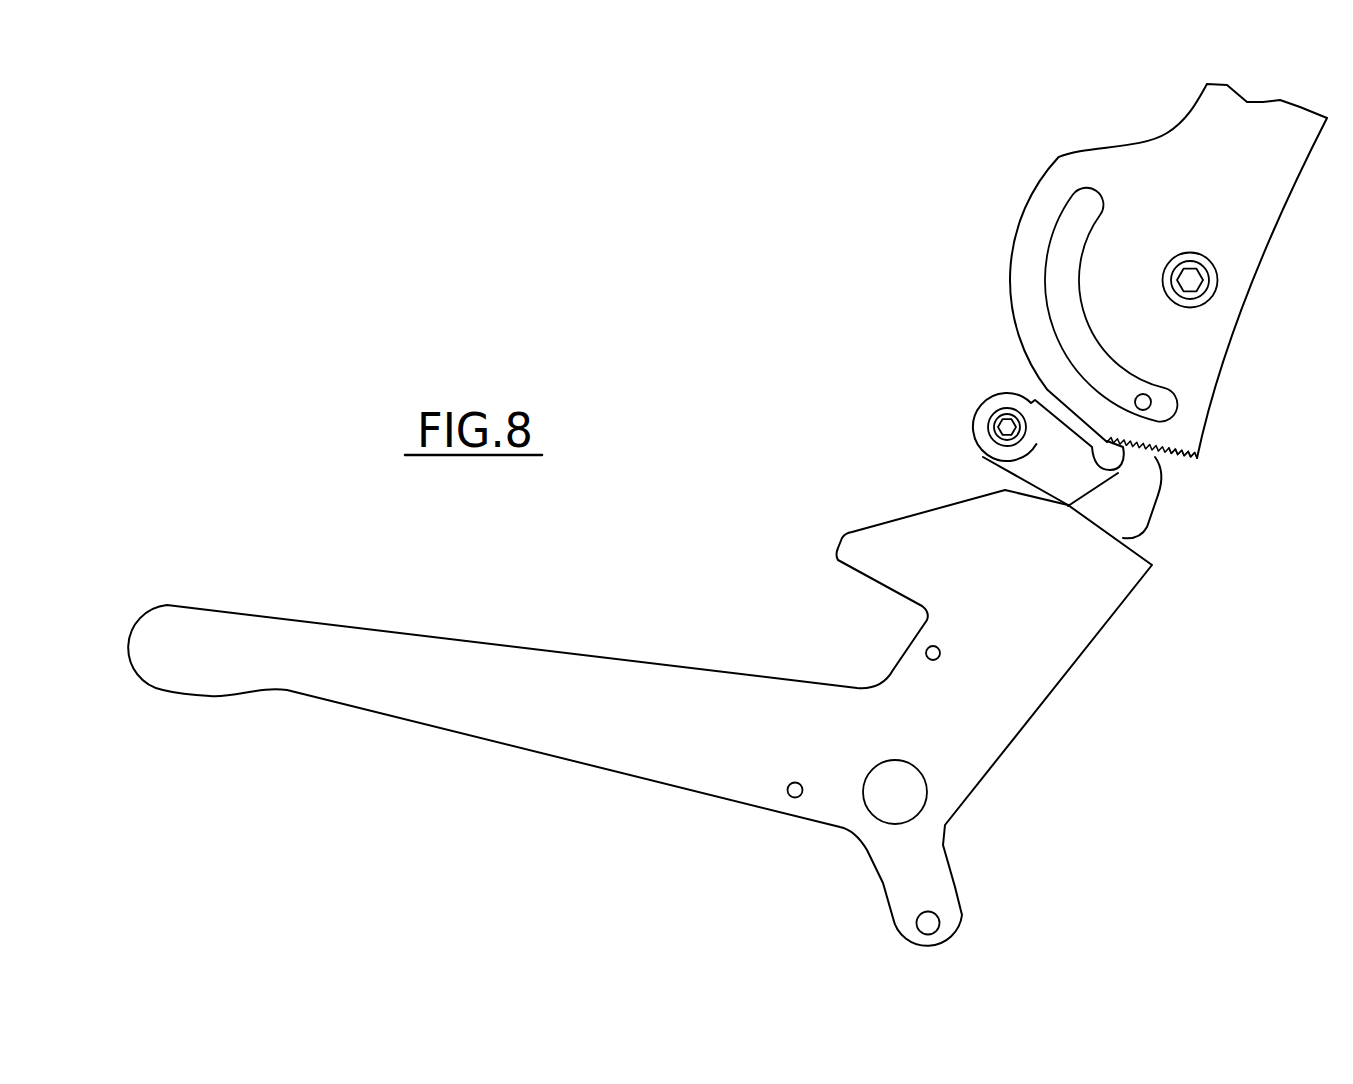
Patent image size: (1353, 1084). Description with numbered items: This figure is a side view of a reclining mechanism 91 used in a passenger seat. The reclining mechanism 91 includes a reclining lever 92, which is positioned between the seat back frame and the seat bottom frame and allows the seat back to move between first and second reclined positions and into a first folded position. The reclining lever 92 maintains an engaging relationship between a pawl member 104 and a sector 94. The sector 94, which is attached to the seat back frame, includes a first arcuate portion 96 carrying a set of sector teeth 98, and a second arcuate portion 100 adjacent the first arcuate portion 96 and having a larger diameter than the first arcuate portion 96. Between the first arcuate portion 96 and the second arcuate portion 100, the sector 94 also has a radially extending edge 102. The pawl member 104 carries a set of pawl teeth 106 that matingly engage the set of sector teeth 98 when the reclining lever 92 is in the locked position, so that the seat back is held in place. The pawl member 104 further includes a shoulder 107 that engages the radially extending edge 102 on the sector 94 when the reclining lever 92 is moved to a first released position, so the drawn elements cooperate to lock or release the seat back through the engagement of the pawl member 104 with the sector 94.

The reclining mechanism 91 is at (1038, 323).
The reclining lever 92 is at (362, 637).
The sector 94 is at (1125, 279).
The first arcuate portion 96 is at (1170, 440).
The sector teeth 98 is at (1197, 460).
The second arcuate portion 100 is at (1003, 296).
The radially extending edge 102 is at (1004, 406).
The pawl member 104 is at (980, 457).
The pawl teeth 106 is at (1148, 458).
The shoulder 107 is at (1116, 510).